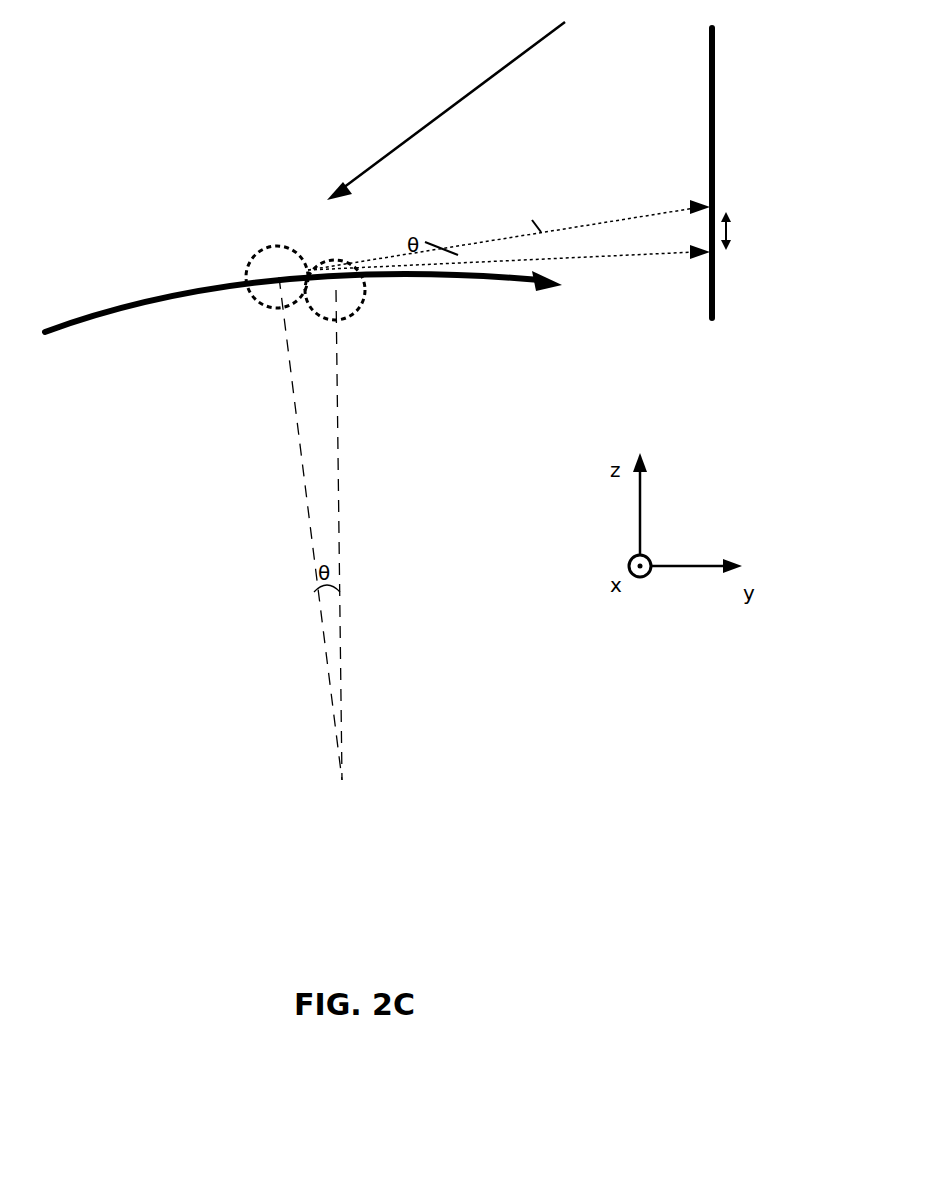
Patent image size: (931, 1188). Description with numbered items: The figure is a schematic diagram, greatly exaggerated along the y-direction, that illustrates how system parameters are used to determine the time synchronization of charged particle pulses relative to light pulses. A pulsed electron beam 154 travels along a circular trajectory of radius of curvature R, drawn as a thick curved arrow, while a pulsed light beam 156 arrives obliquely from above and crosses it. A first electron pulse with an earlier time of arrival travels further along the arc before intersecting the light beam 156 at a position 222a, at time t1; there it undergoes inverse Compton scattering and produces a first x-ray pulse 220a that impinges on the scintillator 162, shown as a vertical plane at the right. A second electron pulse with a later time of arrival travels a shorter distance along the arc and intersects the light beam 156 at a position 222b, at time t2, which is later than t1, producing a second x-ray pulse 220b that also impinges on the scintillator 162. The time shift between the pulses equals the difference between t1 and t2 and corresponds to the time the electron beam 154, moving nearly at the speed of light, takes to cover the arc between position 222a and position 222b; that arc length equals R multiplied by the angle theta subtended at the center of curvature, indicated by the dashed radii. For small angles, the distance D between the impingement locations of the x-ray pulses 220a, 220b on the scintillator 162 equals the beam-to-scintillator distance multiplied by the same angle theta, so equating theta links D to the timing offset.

The electron beam 154 is at (100, 307).
The light beam 156 is at (486, 78).
The scintillator 162 is at (714, 293).
The first x-ray pulse 220a is at (620, 258).
The second x-ray pulse 220b is at (664, 213).
The position 222a is at (362, 300).
The position 222b is at (256, 302).
The time of arrival of the first electron pulse t1 is at (333, 275).
The time of arrival of the second electron pulse t2 is at (277, 280).
The radius of curvature R is at (288, 478).
The distance D is at (737, 231).